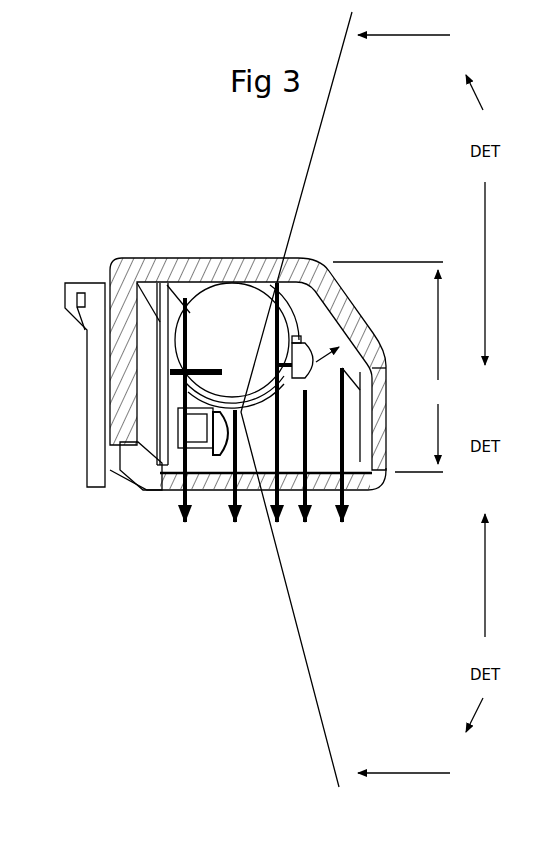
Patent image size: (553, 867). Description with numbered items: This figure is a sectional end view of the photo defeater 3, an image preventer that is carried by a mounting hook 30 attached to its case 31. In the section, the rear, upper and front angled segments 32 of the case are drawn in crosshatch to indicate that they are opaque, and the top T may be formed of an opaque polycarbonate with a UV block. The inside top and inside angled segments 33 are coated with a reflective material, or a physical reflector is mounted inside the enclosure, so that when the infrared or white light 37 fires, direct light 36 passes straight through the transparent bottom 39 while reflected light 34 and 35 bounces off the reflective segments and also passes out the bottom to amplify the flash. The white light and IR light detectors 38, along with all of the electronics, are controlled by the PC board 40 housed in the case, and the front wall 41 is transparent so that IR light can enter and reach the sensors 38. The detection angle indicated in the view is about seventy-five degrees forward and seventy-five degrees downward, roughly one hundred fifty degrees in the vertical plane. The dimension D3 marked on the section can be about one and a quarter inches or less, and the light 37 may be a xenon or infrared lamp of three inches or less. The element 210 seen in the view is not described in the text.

The photo defeater 3 is at (178, 130).
The mounting hook 30 is at (95, 290).
The case 31 is at (185, 267).
The rear, upper and front angled segments 32 is at (360, 332).
The inside top and inside angled segments 33 is at (291, 311).
The reflected light 34 is at (307, 530).
The reflected light 35 is at (186, 525).
The direct light 36 is at (235, 525).
The infrared or white light 37 is at (312, 350).
The white light and IR light detectors 38 is at (203, 433).
The transparent bottom 39 is at (160, 490).
The PC board 40 is at (165, 340).
The front wall 41 is at (388, 478).
The ball 210 is at (237, 320).
The top T is at (222, 258).
The D3 dimension D3 is at (390, 367).